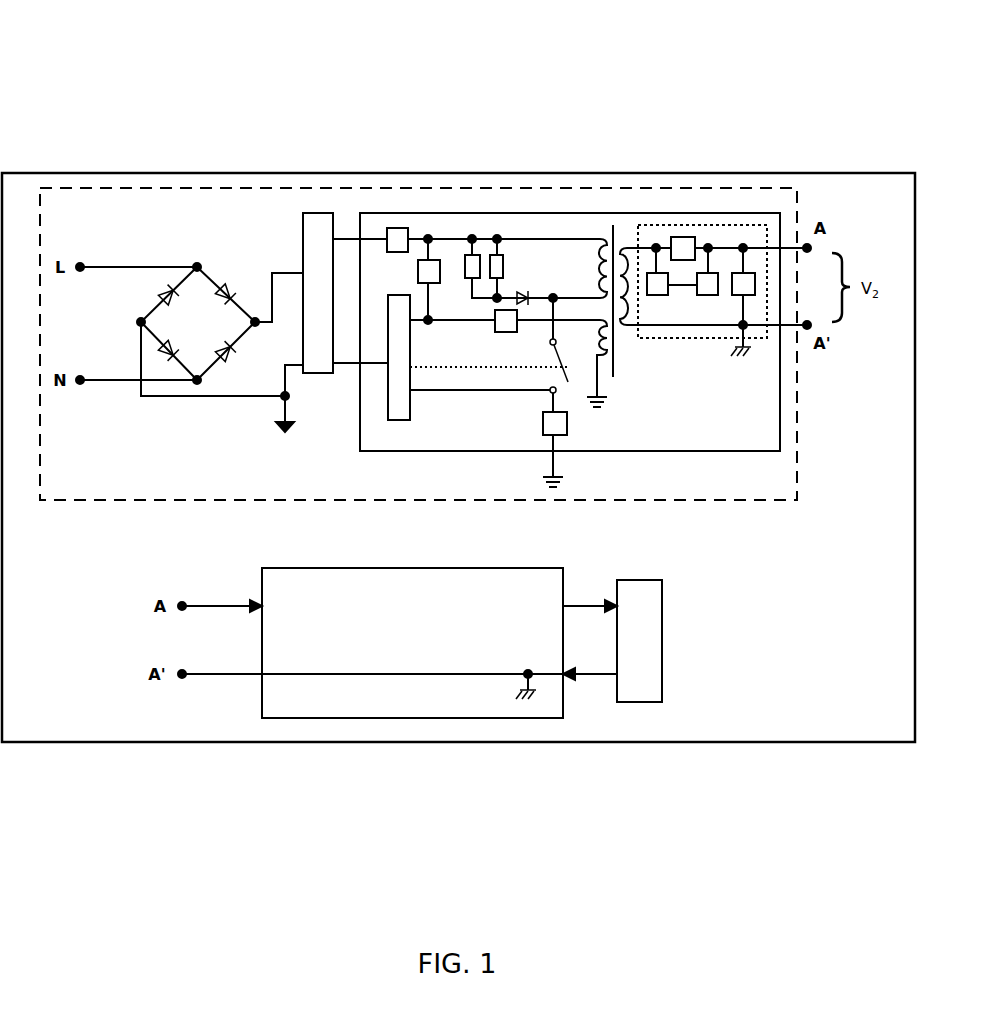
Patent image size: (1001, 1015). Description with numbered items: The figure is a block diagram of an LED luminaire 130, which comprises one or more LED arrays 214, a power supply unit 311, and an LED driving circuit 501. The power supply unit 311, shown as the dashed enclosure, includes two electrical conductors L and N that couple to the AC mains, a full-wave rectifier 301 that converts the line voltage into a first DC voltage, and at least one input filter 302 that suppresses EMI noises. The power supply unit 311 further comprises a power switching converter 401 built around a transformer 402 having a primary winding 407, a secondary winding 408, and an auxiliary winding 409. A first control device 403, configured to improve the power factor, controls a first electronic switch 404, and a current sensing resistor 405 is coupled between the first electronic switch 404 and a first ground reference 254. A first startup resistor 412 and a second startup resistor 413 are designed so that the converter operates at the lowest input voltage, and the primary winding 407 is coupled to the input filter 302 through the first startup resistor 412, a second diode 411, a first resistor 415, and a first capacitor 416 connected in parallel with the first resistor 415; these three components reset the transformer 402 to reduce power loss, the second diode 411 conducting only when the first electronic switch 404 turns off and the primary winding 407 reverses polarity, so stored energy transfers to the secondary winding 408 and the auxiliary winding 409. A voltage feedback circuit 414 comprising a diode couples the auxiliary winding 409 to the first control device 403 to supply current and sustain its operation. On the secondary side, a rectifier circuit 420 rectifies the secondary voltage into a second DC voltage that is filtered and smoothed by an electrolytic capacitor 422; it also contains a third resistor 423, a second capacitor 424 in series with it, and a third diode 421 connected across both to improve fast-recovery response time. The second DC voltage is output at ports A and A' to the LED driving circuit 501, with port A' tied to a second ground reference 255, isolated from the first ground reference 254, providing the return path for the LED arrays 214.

The LED luminaire 130 is at (347, 173).
The power supply unit 311 is at (182, 188).
The full-wave rectifier 301 is at (174, 258).
The input filter 302 is at (315, 209).
The transformer 402 is at (617, 227).
The first control device 403 is at (395, 421).
The first startup resistor 412 is at (395, 226).
The second startup resistor 413 is at (425, 260).
The first capacitor 416 is at (470, 280).
The first resistor 415 is at (503, 255).
The second diode 411 is at (525, 294).
The voltage feedback circuit 414 is at (504, 333).
The first electronic switch 404 is at (551, 348).
The current sensing resistor 405 is at (544, 437).
The first ground reference 254 is at (560, 490).
The power switching converter 401 is at (704, 242).
The primary winding 407 is at (596, 268).
The secondary winding 408 is at (638, 245).
The auxiliary winding 409 is at (612, 378).
The rectifier circuit 420 is at (771, 227).
The third diode 421 is at (687, 237).
The electrolytic capacitor 422 is at (750, 296).
The third resistor 423 is at (656, 296).
The second capacitor 424 is at (708, 296).
The second ground reference 255 is at (730, 358).
The LED driving circuit 501 is at (386, 718).
The LED arrays 214 is at (664, 590).